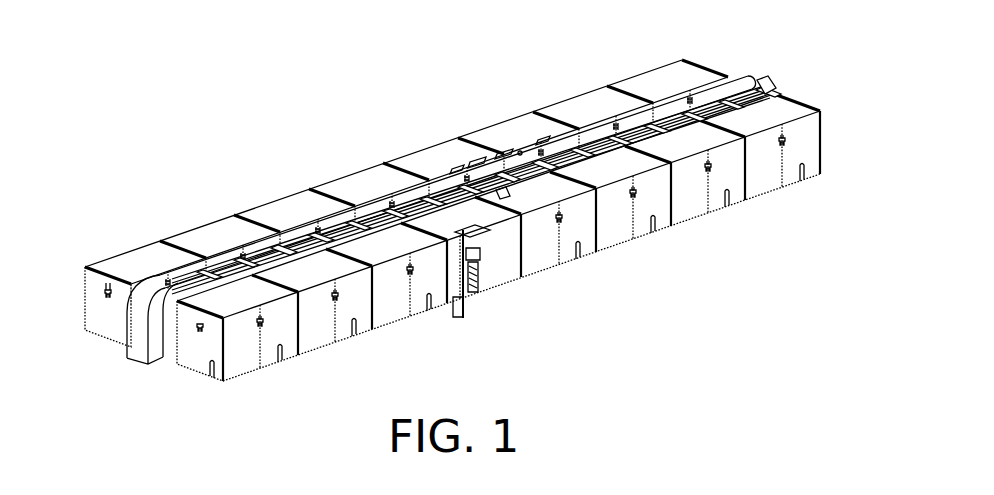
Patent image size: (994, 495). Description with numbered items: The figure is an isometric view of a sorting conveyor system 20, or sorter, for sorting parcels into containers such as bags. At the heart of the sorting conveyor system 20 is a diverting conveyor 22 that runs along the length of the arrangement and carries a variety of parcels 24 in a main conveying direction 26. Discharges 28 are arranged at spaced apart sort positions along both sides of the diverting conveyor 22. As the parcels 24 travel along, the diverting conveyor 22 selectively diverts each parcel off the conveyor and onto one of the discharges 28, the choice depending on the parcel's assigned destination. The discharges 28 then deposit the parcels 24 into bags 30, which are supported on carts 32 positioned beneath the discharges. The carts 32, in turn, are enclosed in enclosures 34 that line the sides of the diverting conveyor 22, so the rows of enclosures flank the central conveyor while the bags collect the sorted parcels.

The sorting conveyor system 20 is at (246, 92).
The diverting conveyor 22 is at (140, 300).
The parcels 24 is at (480, 167).
The main conveying direction 26 is at (177, 279).
The discharges 28 is at (765, 78).
The bags 30 is at (505, 198).
The carts 32 is at (470, 247).
The enclosures 34 is at (232, 348).